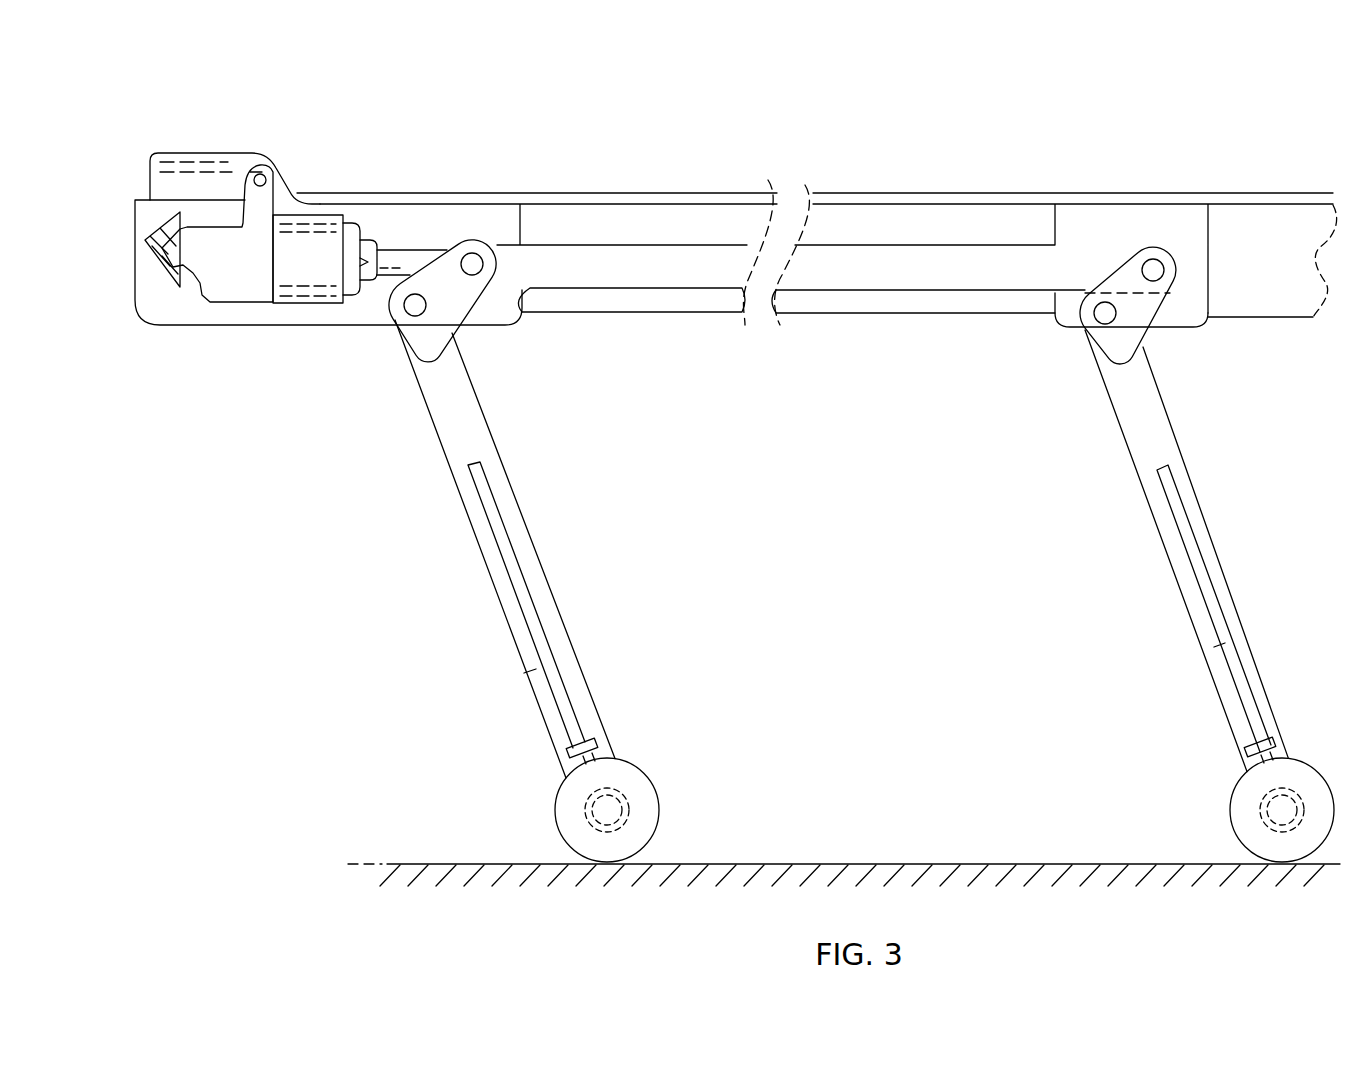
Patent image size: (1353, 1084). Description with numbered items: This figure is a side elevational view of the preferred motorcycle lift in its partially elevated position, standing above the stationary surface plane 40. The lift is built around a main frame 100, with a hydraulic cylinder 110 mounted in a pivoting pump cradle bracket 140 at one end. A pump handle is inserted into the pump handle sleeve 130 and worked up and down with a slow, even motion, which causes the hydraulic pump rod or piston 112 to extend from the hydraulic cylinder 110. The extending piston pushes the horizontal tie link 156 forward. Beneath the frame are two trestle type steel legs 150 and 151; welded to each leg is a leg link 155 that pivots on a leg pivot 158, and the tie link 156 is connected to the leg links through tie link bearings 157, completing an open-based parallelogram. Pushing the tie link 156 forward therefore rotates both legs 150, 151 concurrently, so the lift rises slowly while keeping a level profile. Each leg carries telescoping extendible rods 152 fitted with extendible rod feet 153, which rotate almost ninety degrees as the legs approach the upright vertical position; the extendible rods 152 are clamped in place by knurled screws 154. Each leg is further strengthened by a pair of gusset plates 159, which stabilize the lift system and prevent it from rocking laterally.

The stationary surface plane 40 is at (958, 862).
The main frame 100 is at (850, 192).
The hydraulic cylinder 110 is at (295, 265).
The hydraulic pump rod 112 is at (402, 250).
The pump handle sleeve 130 is at (207, 150).
The pivoting pump cradle bracket 140 is at (215, 278).
The trestle type steel leg 150 is at (550, 582).
The trestle type steel leg 151 is at (1177, 582).
The telescoping extendible rod 152 is at (607, 810).
The extendible rod foot 153 is at (553, 805).
The knurled screw 154 is at (592, 745).
The leg link 155 is at (448, 313).
The tie link 156 is at (626, 258).
The tie link bearing 157 is at (473, 264).
The leg pivot 158 is at (414, 305).
The gusset plate 159 is at (495, 502).